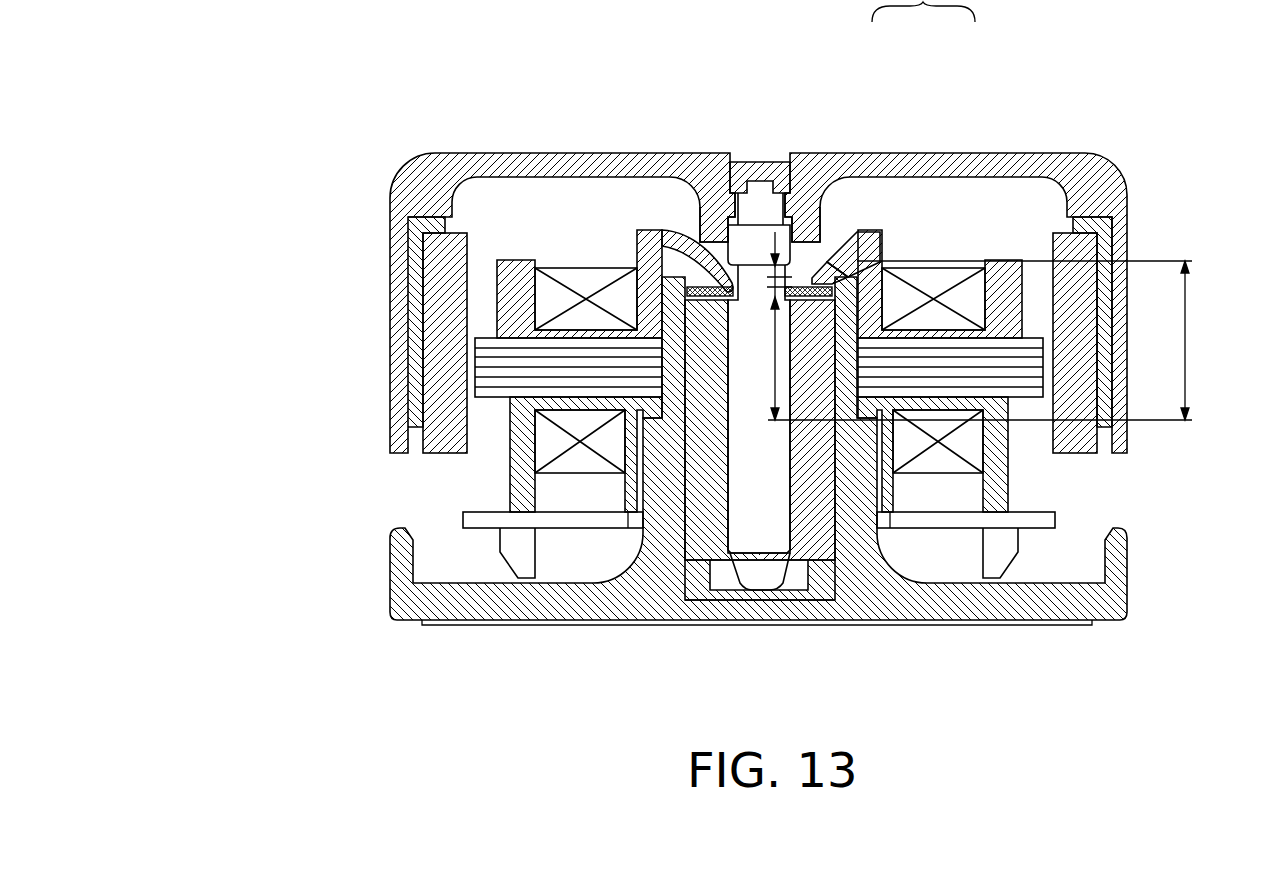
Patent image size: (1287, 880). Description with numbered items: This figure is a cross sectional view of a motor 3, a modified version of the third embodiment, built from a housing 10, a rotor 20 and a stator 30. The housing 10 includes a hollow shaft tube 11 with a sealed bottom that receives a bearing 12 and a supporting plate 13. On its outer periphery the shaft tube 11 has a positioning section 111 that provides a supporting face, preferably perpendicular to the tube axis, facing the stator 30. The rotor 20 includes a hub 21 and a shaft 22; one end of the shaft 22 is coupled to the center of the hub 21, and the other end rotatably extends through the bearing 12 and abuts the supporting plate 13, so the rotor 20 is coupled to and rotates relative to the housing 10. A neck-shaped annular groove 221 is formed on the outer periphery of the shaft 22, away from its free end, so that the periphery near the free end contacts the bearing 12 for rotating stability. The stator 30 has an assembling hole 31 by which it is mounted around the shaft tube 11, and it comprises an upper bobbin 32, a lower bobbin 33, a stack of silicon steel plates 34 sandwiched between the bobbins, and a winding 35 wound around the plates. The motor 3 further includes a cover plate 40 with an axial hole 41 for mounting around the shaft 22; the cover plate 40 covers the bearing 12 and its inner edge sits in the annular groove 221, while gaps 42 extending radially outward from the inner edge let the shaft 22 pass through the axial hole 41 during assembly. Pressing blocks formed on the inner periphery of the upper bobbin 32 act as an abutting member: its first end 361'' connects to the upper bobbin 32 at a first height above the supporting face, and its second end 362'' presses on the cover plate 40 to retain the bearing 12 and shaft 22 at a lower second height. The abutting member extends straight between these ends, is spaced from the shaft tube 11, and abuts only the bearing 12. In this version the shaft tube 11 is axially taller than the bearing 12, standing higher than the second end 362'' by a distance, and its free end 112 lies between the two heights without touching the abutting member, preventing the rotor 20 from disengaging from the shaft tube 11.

The motor 3 is at (318, 180).
The housing 10 is at (1123, 580).
The shaft tube 11 is at (847, 337).
The positioning section 111 is at (866, 418).
The free end 112 is at (838, 268).
The bearing 12 is at (697, 510).
The supporting plate 13 is at (693, 580).
The rotor 20 is at (1135, 248).
The hub 21 is at (500, 160).
The shaft 22 is at (780, 530).
The annular groove 221 is at (731, 280).
The stator 30 is at (483, 317).
The assembling hole 31 is at (803, 248).
The upper bobbin 32 is at (503, 287).
The lower bobbin 33 is at (515, 475).
The silicon steel plates 34 is at (480, 350).
The winding 35 is at (567, 270).
The cover plate 40 is at (690, 255).
The axial hole 41 is at (718, 285).
The gaps 42 is at (705, 270).
The first end 361'' is at (905, 158).
The second end 362'' is at (855, 156).